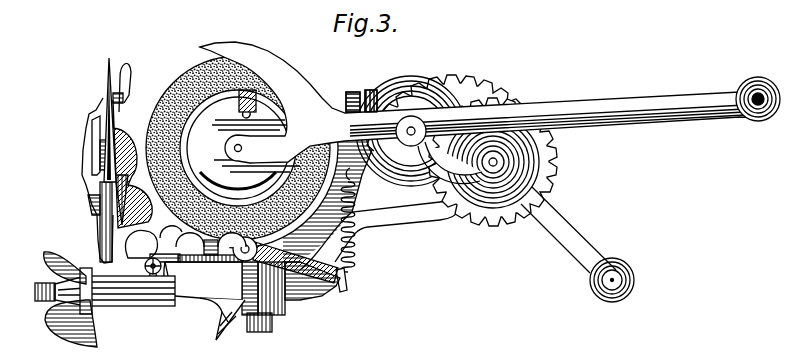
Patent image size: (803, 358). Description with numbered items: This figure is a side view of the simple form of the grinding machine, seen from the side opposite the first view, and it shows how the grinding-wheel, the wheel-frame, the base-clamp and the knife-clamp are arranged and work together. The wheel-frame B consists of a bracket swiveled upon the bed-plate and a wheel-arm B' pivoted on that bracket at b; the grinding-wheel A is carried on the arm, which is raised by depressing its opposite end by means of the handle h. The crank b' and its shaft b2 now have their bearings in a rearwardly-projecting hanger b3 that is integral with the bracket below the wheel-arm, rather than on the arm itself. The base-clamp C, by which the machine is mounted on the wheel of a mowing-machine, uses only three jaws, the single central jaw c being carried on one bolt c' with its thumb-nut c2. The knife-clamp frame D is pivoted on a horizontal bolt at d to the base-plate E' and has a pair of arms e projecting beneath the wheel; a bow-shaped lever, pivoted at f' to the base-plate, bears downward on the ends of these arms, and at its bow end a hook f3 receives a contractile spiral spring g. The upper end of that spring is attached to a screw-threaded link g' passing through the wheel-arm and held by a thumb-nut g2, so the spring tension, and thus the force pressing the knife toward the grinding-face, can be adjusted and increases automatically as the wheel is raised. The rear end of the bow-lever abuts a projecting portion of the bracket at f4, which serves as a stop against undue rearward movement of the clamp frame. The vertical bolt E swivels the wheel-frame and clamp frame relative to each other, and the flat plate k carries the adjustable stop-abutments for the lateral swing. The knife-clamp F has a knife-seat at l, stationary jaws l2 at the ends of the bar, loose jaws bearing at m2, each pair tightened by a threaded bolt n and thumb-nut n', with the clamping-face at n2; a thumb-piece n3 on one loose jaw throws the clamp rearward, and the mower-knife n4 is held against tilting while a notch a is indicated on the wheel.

The wheel A is at (238, 148).
The notch a is at (256, 131).
The wheel-frame B is at (382, 193).
The wheel-arm B' is at (480, 102).
The pivot of wheel-arm b is at (405, 131).
The crank b' is at (577, 244).
The crank shaft b2 is at (497, 162).
The hanger b3 is at (450, 165).
The base-clamp C is at (115, 296).
The central jaw c is at (71, 328).
The bolt c' is at (34, 288).
The thumb-nut c2 is at (88, 262).
The knife-clamp frame D is at (153, 246).
The pivot of knife-clamp frame d is at (139, 271).
The vertical pivot or bolt E is at (267, 301).
The base-plate E' is at (203, 277).
The arms of clamp-frame e is at (207, 243).
The knife-clamp F is at (114, 177).
The pivot of bow-lever f' is at (285, 260).
The hook f3 is at (350, 284).
The stop f4 is at (320, 292).
The contractile spiral spring g is at (357, 220).
The screw-threaded rod or link g' is at (375, 81).
The thumb-nut g2 is at (352, 92).
The handle h is at (758, 89).
The flat plate k is at (205, 300).
The knife-seat l is at (98, 160).
The stationary jaws l2 is at (97, 112).
The bearing-point of loose jaw m2 is at (100, 253).
The threaded bolt n is at (83, 202).
The thumb-nut n' is at (171, 227).
The clamping-face n2 is at (113, 98).
The thumb-piece n3 is at (132, 82).
The mower-knife n4 is at (99, 115).